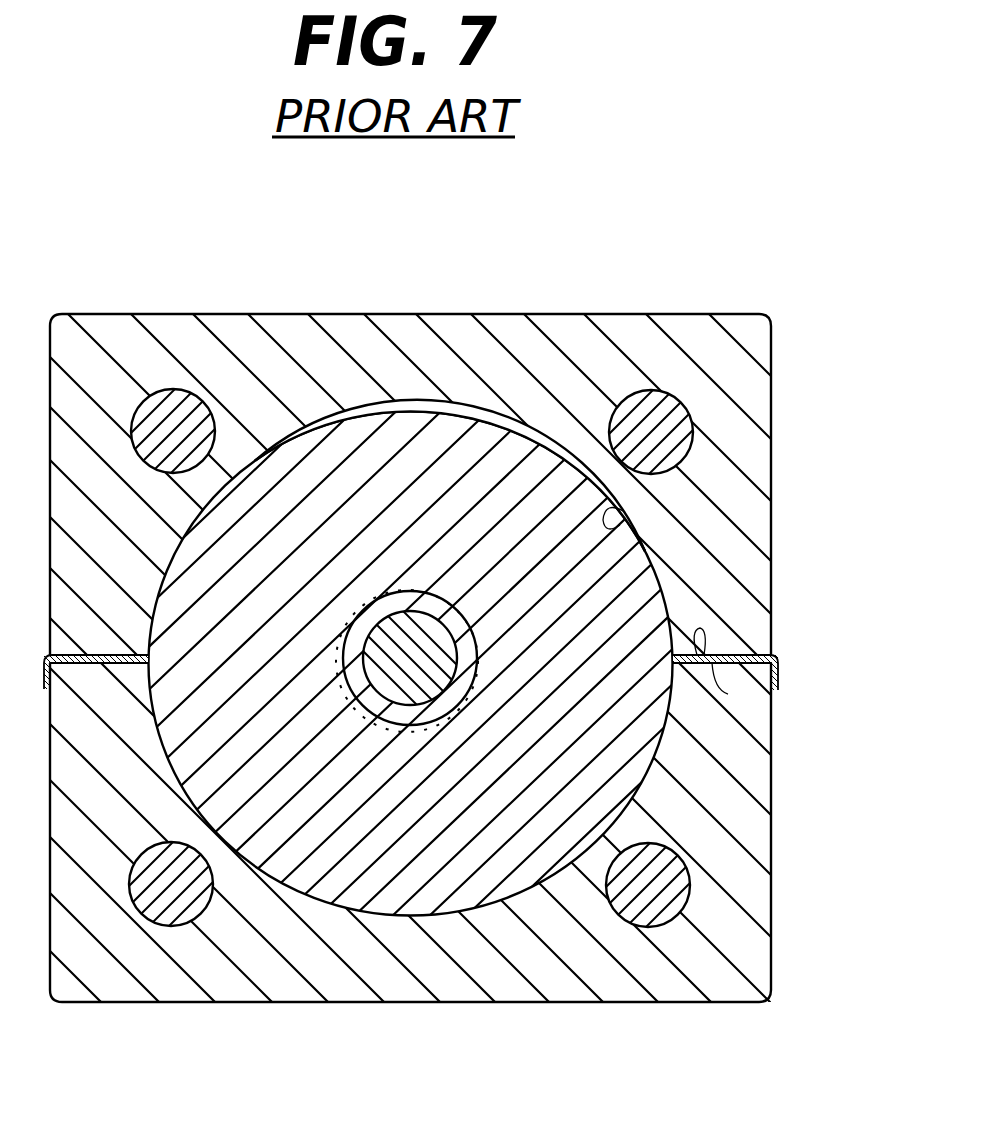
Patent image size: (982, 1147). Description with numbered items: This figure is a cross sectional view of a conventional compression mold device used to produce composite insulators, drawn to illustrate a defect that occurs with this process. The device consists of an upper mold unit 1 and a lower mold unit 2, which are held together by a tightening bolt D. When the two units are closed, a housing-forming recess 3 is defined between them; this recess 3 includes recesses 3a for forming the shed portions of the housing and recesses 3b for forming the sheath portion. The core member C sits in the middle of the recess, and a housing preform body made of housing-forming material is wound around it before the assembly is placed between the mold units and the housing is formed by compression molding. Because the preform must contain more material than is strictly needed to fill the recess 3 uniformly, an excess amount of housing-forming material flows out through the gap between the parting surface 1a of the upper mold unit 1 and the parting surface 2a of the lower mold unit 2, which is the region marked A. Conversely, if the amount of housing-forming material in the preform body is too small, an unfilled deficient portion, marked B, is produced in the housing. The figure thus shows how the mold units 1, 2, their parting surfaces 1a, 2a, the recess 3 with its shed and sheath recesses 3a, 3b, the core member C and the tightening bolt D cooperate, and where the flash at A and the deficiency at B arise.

The upper mold unit 1 is at (762, 350).
The parting surface of the upper mold unit 1a is at (753, 652).
The lower mold unit 2 is at (745, 891).
The parting surface of the lower mold unit 2a is at (772, 742).
The housing-forming recess 3 is at (667, 568).
The recess for the formation of shed portions 3a is at (615, 520).
The recess for the formation of a sheath portion 3b is at (412, 594).
The outflow of excess housing-forming material A is at (780, 677).
The deficient portion B is at (378, 400).
The core member C is at (417, 684).
The tightening bolt D is at (643, 385).